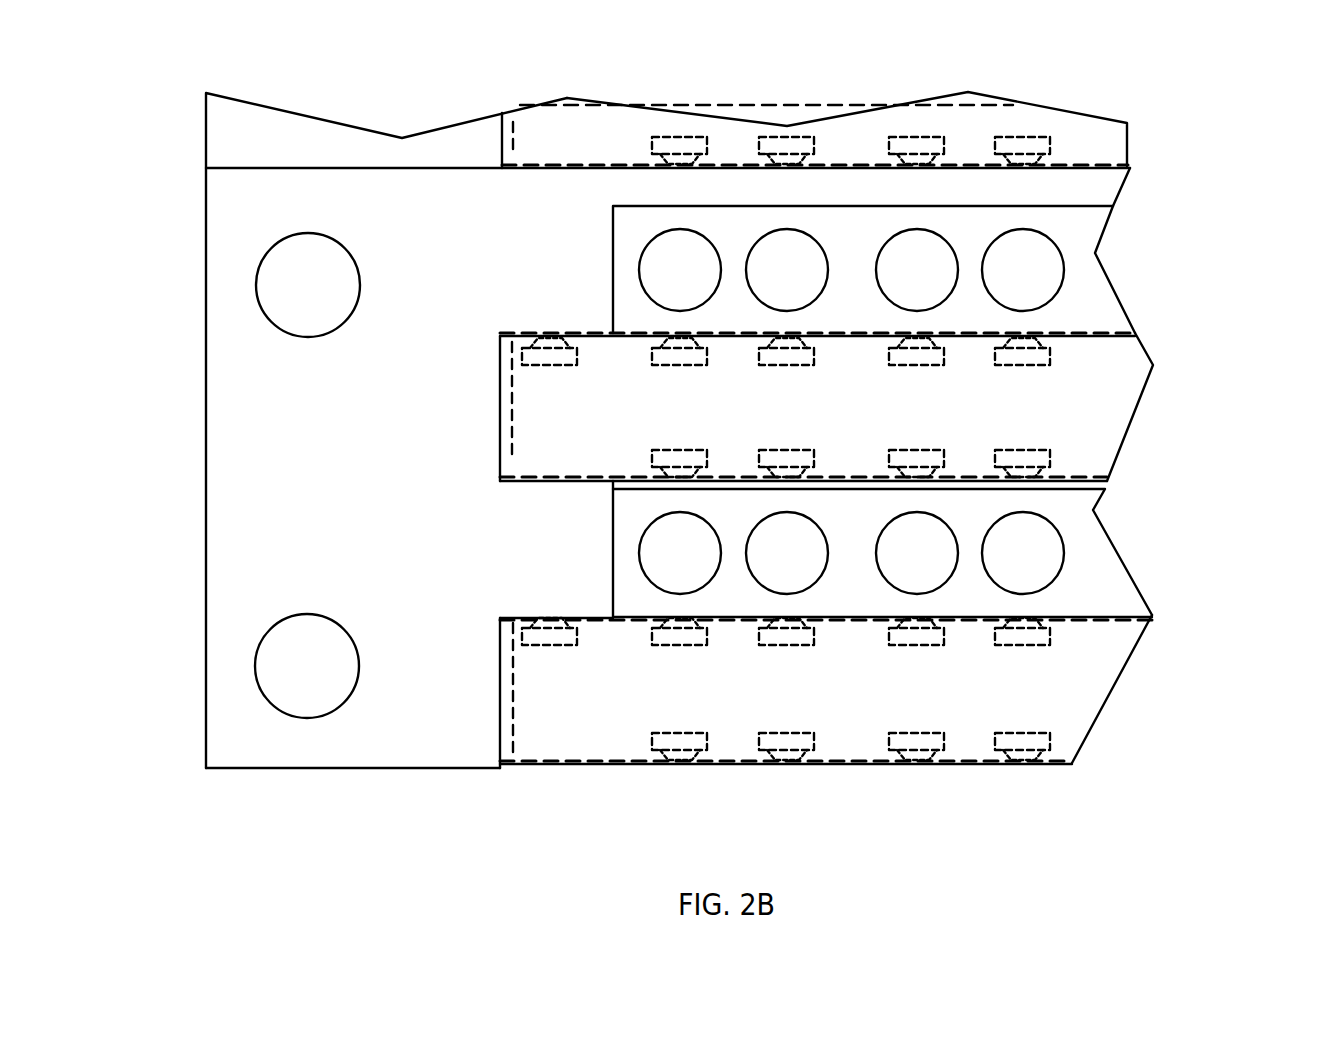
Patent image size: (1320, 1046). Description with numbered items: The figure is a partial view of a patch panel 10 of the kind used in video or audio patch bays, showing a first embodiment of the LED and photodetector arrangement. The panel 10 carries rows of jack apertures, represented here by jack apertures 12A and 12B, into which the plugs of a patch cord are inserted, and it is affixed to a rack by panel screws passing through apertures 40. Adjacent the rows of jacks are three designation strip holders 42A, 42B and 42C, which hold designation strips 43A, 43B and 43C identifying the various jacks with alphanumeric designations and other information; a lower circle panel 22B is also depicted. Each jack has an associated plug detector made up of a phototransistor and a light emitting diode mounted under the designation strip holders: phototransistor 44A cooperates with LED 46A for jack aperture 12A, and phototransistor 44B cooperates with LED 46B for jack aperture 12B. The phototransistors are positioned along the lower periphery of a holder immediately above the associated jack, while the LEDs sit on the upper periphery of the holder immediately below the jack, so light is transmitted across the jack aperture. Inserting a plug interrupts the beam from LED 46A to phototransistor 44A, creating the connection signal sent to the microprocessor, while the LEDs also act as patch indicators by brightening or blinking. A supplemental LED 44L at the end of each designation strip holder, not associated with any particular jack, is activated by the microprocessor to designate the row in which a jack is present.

The patch panel 10 is at (238, 203).
The aperture 40 is at (270, 297).
The jack aperture 12A is at (703, 262).
The jack aperture 12B is at (698, 589).
The interposer panel 22B is at (934, 658).
The designation strip holder 42A is at (827, 97).
The designation strip holder 42B is at (795, 431).
The designation strip holder 42C is at (807, 728).
The designation strip 43A is at (501, 146).
The designation strip 43B is at (498, 340).
The designation strip 43C is at (498, 742).
The phototransistor 44A is at (693, 142).
The phototransistor 44B is at (707, 458).
The LED 44L is at (553, 347).
The light emitting diode 46A is at (662, 357).
The light emitting diode 46B is at (660, 636).